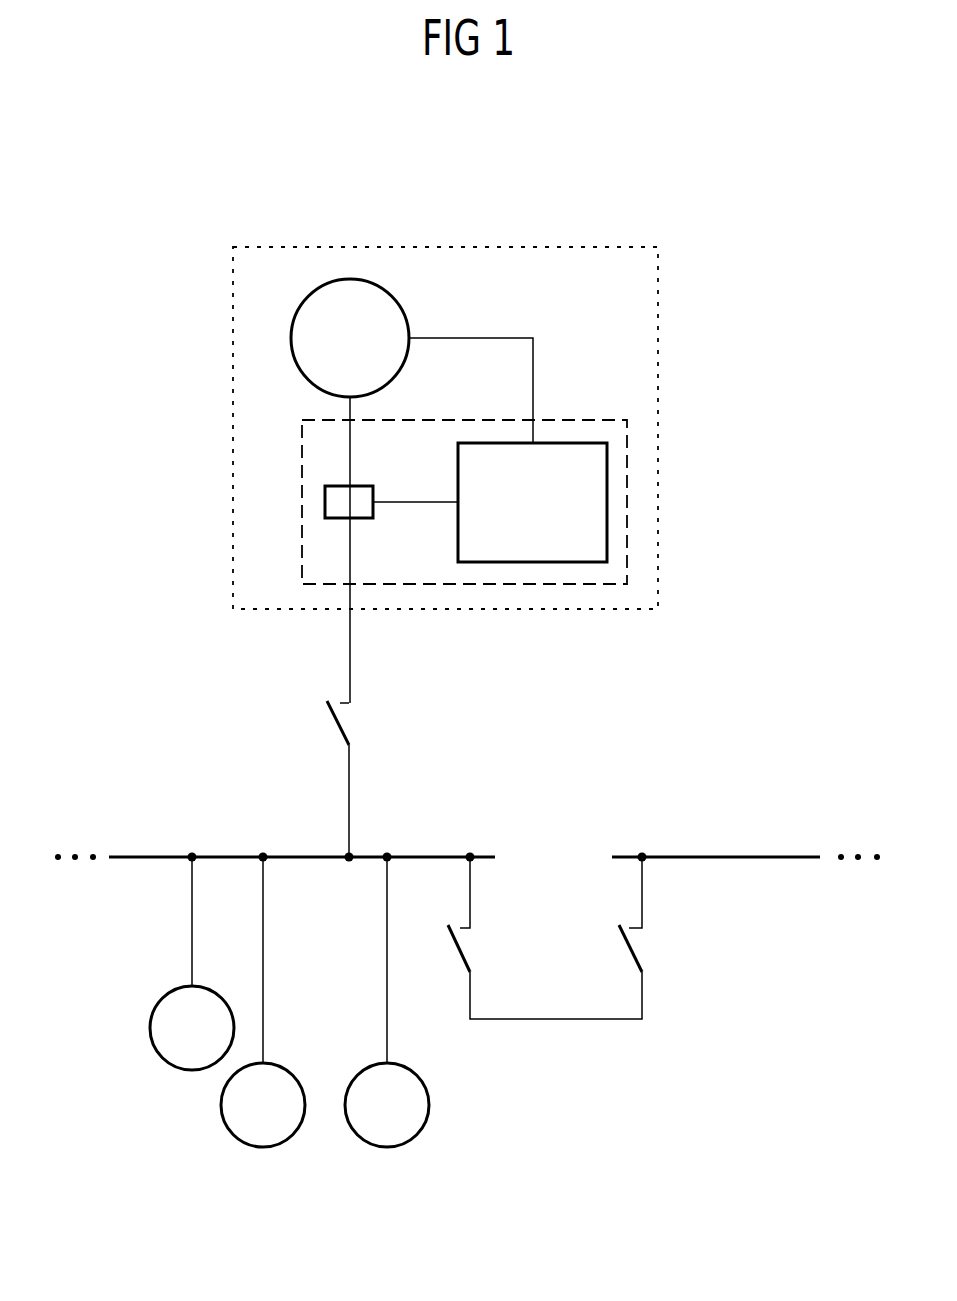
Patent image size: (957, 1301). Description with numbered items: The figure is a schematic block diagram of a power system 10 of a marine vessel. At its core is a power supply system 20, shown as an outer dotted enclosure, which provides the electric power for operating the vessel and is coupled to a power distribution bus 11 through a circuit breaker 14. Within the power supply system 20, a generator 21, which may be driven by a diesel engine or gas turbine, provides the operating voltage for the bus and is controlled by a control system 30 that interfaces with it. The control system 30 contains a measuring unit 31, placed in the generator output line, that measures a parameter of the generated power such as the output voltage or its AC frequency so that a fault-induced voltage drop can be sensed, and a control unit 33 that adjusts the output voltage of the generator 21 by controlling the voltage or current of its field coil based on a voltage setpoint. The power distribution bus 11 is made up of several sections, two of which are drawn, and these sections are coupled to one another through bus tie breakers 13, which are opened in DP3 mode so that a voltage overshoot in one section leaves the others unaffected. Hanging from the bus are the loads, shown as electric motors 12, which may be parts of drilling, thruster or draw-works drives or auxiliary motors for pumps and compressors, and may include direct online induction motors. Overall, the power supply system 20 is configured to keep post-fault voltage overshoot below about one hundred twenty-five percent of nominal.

The power system 10 is at (186, 164).
The power distribution bus 11 is at (294, 855).
The electric motors 12 is at (128, 987).
The bus tie breakers 13 is at (556, 1019).
The circuit breaker 14 is at (353, 718).
The power supply system 20 is at (615, 247).
The generator 21 is at (400, 303).
The control system 30 is at (594, 420).
The measuring unit 31 is at (325, 503).
The control unit 33 is at (458, 463).